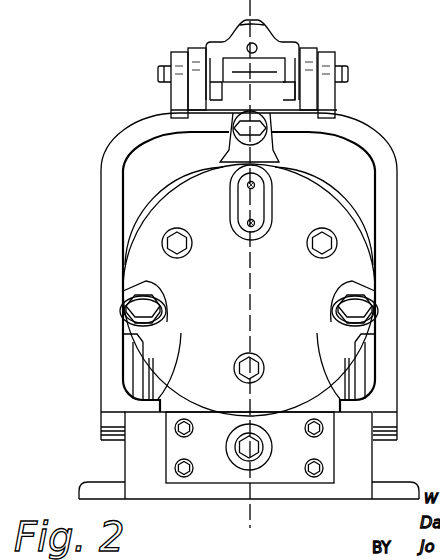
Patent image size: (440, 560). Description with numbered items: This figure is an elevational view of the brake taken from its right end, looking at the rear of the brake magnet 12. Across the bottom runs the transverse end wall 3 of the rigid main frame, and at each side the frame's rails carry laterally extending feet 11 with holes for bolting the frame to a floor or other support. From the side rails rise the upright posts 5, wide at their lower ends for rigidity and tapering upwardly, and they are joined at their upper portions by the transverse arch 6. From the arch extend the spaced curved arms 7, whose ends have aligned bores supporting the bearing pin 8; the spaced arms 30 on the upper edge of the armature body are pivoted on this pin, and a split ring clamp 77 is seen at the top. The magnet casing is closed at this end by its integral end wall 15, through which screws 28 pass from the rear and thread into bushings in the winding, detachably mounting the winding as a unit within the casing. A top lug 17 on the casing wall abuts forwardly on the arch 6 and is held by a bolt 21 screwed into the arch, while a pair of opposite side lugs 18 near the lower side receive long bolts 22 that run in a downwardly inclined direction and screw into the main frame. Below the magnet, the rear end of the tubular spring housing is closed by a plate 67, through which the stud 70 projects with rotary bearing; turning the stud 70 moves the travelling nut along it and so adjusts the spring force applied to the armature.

The transverse end wall 3 is at (368, 459).
The upright posts 5 is at (103, 236).
The transverse arch 6 is at (356, 150).
The curved arms 7 is at (197, 48).
The bearing pin 8 is at (349, 74).
The feet 11 is at (90, 482).
The brake magnet 12 is at (249, 290).
The end wall 15 is at (284, 326).
The top lug 17 is at (270, 147).
The side lugs 18 is at (128, 328).
The bolt 21 is at (238, 124).
The long bolts 22 is at (143, 302).
The screws 28 is at (180, 244).
The spaced arms 30 is at (180, 54).
The rear end plate 67 is at (329, 448).
The stud 70 is at (257, 442).
The split ring clamp 77 is at (270, 33).